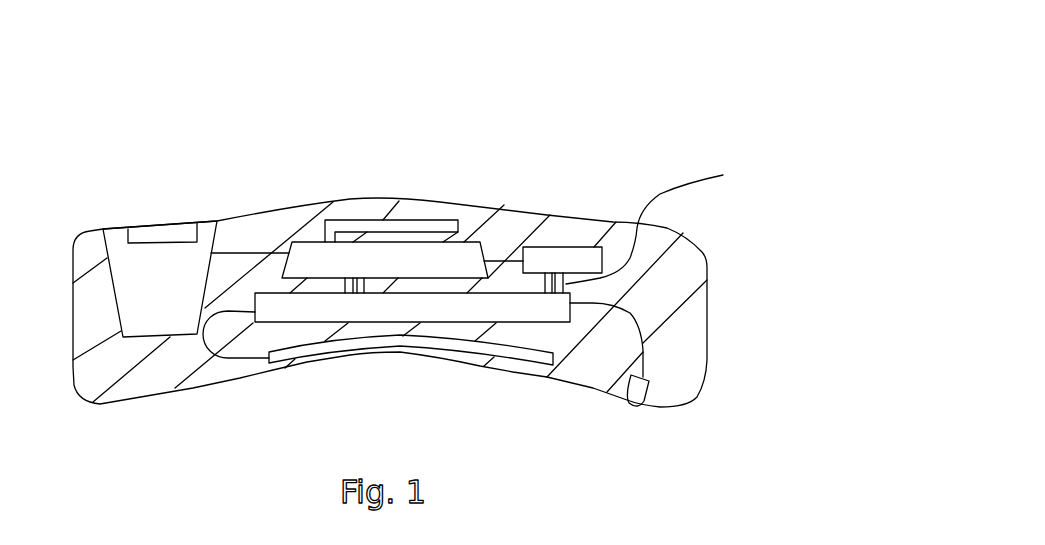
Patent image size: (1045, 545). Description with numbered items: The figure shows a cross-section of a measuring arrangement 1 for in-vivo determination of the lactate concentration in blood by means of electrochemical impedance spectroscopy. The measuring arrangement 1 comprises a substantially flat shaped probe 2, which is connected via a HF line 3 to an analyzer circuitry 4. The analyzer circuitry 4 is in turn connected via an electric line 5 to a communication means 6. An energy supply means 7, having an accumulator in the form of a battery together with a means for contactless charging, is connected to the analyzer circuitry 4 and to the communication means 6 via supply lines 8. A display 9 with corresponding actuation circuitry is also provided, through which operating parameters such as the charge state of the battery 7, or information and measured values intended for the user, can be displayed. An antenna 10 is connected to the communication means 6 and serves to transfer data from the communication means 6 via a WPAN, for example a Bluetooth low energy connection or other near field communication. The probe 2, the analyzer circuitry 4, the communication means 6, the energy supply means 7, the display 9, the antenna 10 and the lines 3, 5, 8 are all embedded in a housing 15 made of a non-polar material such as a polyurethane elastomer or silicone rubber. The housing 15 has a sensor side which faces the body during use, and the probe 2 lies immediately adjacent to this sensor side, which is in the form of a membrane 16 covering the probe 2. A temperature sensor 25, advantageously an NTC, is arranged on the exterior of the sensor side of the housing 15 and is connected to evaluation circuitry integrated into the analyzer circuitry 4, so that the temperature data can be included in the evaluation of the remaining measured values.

The measuring arrangement 1 is at (653, 138).
The probe 2 is at (388, 343).
The HF line 3 is at (203, 347).
The analyzer circuitry 4 is at (356, 310).
The electric line 5 is at (376, 272).
The communication means 6 is at (308, 257).
The energy supply means 7 is at (565, 257).
The supply lines 8 is at (659, 219).
The display 9 is at (178, 233).
The antenna 10 is at (405, 223).
The housing 15 is at (690, 260).
The membrane 16 is at (500, 365).
The temperature sensor 25 is at (634, 396).